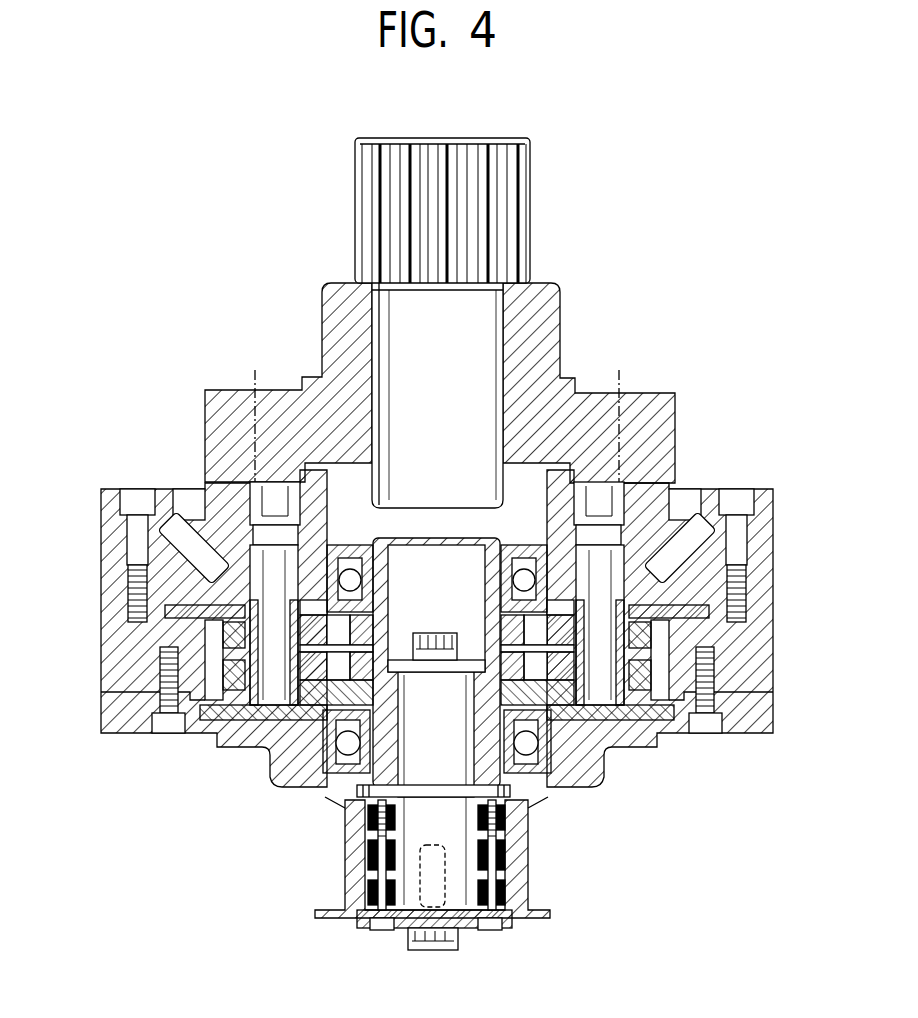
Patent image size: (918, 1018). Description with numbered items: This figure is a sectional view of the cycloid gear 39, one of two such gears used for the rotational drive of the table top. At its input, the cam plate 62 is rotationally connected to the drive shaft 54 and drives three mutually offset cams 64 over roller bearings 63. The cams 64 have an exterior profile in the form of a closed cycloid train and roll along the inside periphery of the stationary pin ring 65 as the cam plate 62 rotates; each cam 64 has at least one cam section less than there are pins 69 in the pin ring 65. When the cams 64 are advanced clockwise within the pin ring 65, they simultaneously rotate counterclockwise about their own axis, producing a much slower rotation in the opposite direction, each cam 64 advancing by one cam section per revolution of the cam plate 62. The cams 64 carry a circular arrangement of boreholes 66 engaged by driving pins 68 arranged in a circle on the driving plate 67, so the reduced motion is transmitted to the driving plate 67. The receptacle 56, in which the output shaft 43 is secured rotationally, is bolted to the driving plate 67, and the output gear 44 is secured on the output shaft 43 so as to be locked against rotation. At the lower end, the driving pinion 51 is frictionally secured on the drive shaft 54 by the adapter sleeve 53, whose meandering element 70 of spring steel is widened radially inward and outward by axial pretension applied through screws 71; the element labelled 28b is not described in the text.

The output gear 44 is at (455, 170).
The output shaft 43 is at (490, 323).
The cycloid gear 39 is at (275, 350).
The receptacle 56 is at (557, 420).
The driving pins 68 is at (640, 510).
The driving plate 67 is at (655, 527).
The pin ring 65 is at (114, 624).
The roller bearings 63 is at (355, 634).
The pins 69 is at (660, 636).
The cams 64 is at (582, 640).
The boreholes 66 is at (632, 650).
The cam plate 62 is at (383, 702).
The drive shaft 54 is at (400, 838).
The driving pinion 51 is at (513, 833).
The meandering element 70 is at (505, 878).
The adapter sleeve 53 is at (362, 930).
The screws 71 is at (490, 930).
The coupling 28b is at (430, 950).